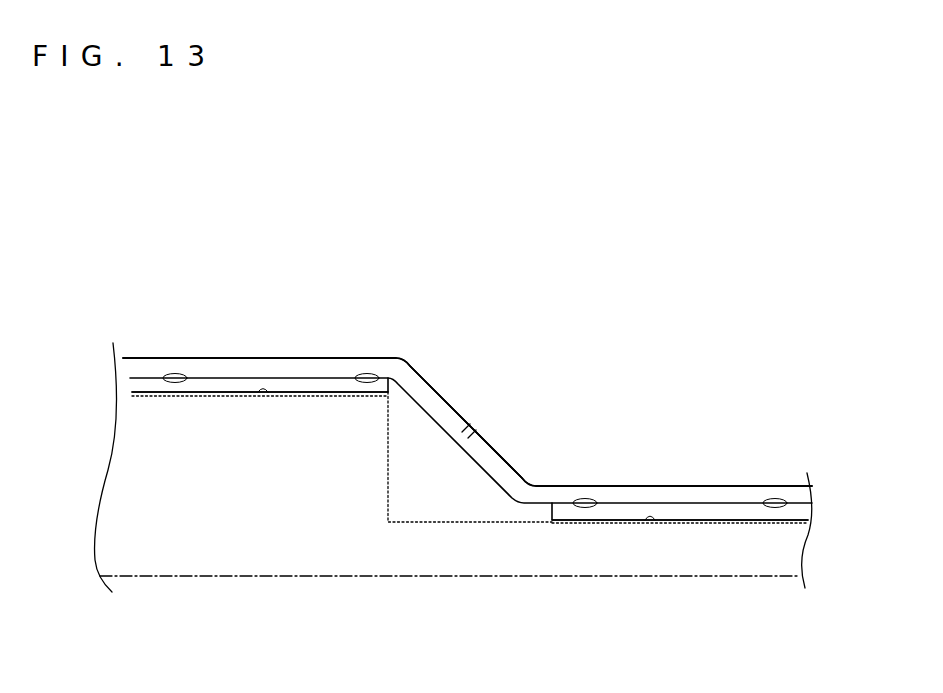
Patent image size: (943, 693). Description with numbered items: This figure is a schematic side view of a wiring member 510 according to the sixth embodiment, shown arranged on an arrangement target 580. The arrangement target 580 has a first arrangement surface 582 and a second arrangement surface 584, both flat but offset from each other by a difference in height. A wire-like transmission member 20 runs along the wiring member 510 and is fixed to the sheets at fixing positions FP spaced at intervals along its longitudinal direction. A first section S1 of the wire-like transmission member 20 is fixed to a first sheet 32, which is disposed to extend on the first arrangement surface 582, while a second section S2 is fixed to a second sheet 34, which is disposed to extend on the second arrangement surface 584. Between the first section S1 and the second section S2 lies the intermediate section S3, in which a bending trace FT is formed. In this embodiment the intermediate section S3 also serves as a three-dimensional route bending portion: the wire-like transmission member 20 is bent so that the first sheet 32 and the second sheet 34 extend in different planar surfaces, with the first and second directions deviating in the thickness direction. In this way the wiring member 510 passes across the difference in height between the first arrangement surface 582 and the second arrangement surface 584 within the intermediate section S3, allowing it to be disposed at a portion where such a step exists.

The wiring member 510 is at (141, 228).
The wire-like transmission member 20 is at (743, 490).
The first sheet 32 is at (200, 393).
The second sheet 34 is at (717, 521).
The arrangement target 580 is at (341, 578).
The first arrangement surface 582 is at (263, 393).
The second arrangement surface 584 is at (649, 524).
The first section S1 is at (258, 355).
The second section S2 is at (693, 455).
The intermediate section S3 is at (462, 385).
The fixing positions FP is at (366, 374).
The bending trace FT is at (470, 425).